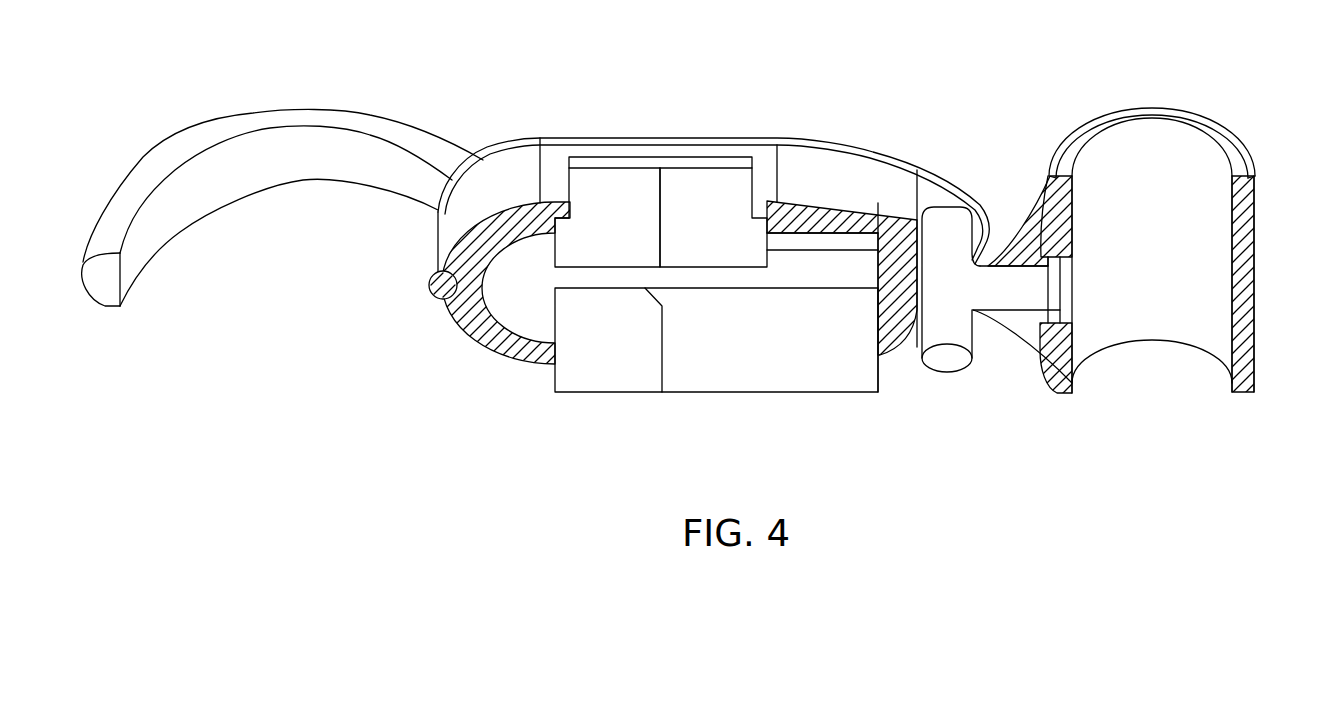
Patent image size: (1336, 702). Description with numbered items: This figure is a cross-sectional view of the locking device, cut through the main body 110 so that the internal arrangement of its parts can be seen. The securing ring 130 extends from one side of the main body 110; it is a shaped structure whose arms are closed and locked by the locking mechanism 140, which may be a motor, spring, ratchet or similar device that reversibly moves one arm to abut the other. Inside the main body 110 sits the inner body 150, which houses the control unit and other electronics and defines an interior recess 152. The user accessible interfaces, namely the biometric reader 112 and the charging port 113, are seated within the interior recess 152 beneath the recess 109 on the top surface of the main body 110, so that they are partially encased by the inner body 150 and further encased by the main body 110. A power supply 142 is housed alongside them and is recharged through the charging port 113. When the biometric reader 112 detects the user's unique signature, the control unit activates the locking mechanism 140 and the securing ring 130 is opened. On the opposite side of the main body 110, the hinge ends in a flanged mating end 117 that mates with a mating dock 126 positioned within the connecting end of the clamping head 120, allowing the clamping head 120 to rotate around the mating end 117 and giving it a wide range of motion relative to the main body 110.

The recess 109 is at (728, 155).
The main body 110 is at (873, 148).
The biometric reader 112 is at (608, 187).
The charging port 113 is at (692, 185).
The mating end 117 is at (1034, 295).
The clamping head 120 is at (1257, 248).
The mating dock 126 is at (1043, 323).
The securing ring 130 is at (150, 180).
The locking mechanism 140 is at (605, 380).
The power supply 142 is at (767, 380).
The inner body 150 is at (486, 334).
The interior recess 152 is at (438, 258).